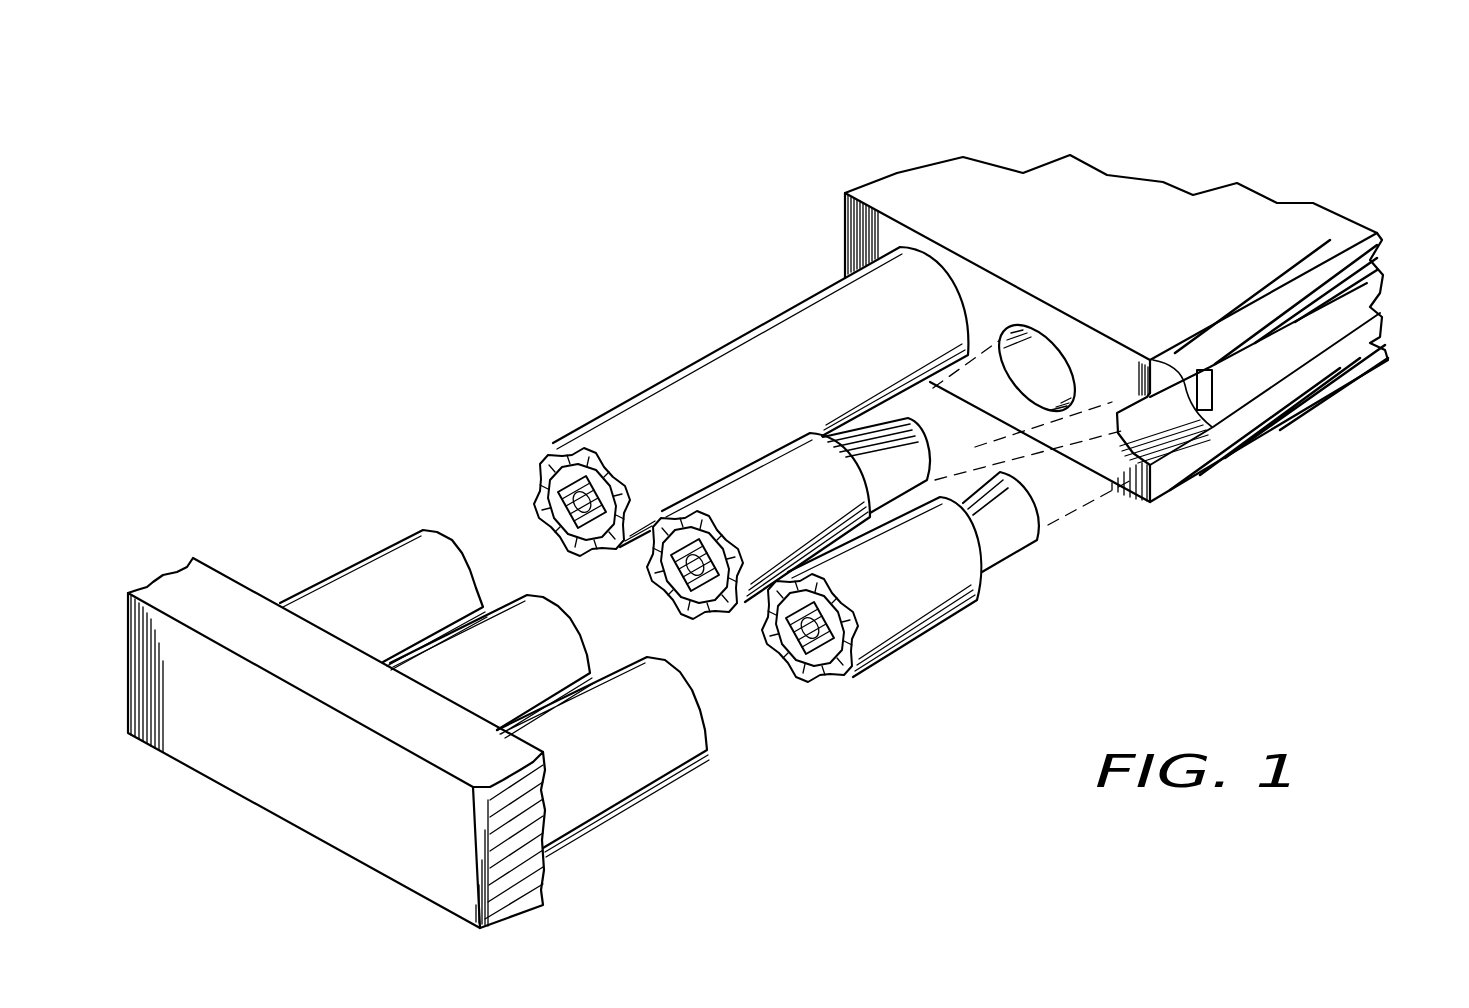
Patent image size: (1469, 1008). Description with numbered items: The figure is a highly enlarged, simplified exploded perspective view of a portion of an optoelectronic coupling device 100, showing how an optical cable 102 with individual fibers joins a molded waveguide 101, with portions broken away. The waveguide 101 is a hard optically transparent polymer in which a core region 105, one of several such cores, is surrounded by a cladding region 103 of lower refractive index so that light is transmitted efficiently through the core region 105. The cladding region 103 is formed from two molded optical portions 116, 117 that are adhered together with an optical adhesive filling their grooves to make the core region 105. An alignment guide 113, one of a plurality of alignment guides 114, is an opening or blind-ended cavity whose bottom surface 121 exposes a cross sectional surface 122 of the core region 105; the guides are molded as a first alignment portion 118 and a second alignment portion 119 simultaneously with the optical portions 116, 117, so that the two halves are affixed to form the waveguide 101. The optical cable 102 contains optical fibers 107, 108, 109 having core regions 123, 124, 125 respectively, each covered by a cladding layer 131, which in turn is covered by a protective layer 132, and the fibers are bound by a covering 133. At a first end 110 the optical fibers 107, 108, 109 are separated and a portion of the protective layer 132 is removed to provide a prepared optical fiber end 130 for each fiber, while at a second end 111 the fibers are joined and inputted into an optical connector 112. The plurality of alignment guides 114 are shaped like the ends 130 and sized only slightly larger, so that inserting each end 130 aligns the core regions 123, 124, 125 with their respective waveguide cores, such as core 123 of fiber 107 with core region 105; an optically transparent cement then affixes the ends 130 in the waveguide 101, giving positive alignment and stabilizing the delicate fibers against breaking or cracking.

The optoelectronic coupling device 100 is at (1198, 662).
The waveguide 101 is at (1258, 150).
The optical cable 102 is at (432, 460).
The cladding region 103 is at (977, 321).
The core region 105 is at (1380, 303).
The optical fiber 107 is at (953, 660).
The optical fiber 108 is at (647, 585).
The optical fiber 109 is at (640, 368).
The first end 110 is at (792, 262).
The second end 111 is at (302, 552).
The optical connector 112 is at (197, 777).
The alignment guide 113 is at (1157, 393).
The plurality of alignment guides 114 is at (1330, 453).
The optical portion 116 is at (1382, 257).
The optical portion 117 is at (1380, 343).
The first alignment portion 118 is at (1060, 337).
The second alignment portion 119 is at (1013, 397).
The bottom surface 121 is at (1227, 423).
The cross sectional surface 122 is at (1193, 358).
The core region 123 is at (797, 648).
The core region 124 is at (683, 603).
The core region 125 is at (557, 533).
The prepared optical fiber end 130 is at (920, 465).
The cladding layer 131 is at (545, 464).
The protective layer 132 is at (742, 399).
The covering 133 is at (378, 547).